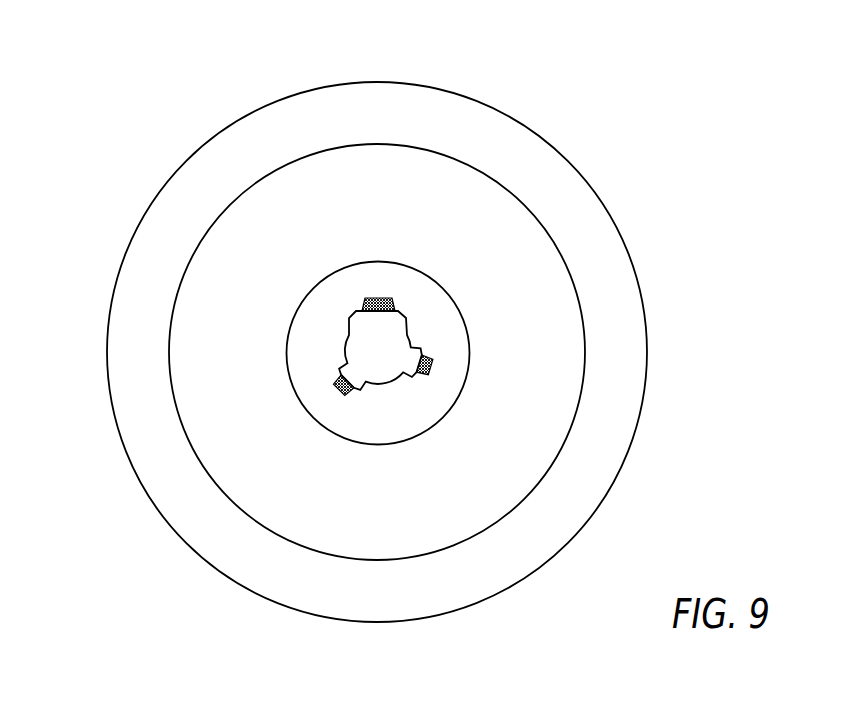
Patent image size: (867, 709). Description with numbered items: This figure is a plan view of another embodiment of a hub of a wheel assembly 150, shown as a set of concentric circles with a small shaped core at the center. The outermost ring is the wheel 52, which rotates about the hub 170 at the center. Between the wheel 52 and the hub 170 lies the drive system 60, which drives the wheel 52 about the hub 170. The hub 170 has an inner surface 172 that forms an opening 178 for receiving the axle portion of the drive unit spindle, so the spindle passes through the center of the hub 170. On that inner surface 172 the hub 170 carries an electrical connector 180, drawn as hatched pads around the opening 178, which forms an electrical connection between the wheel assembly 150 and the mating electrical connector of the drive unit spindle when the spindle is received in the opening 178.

The wheel 52 is at (477, 129).
The drive system 60 is at (232, 433).
The wheel assembly 150 is at (578, 168).
The hub 170 is at (342, 297).
The inner surface 172 is at (412, 341).
The opening 178 is at (368, 355).
The electrical connector 180 is at (338, 397).